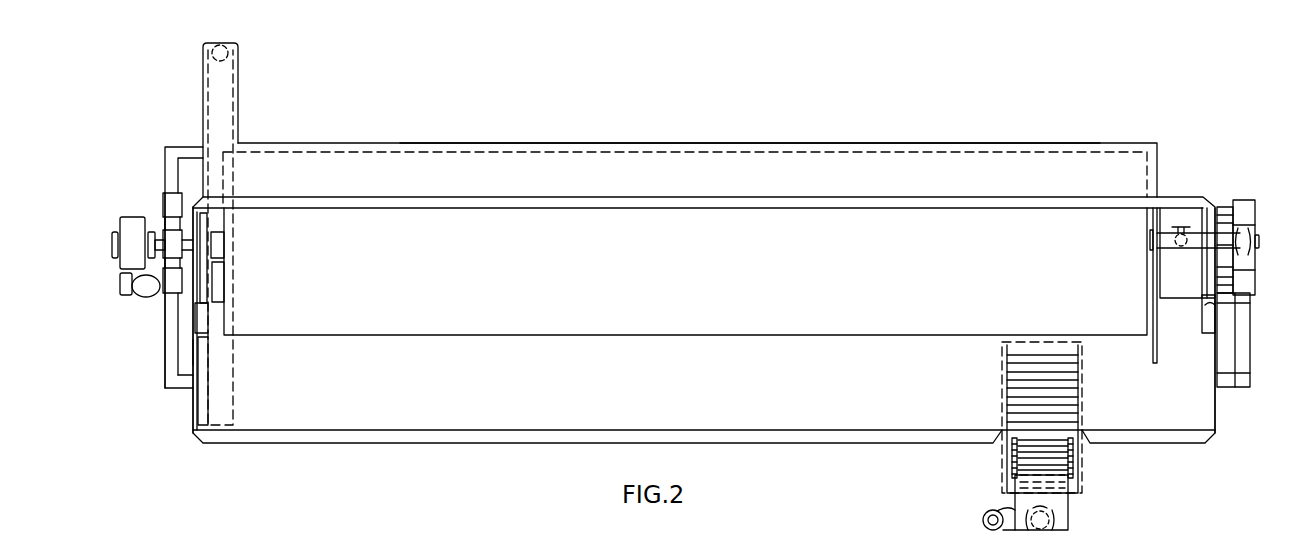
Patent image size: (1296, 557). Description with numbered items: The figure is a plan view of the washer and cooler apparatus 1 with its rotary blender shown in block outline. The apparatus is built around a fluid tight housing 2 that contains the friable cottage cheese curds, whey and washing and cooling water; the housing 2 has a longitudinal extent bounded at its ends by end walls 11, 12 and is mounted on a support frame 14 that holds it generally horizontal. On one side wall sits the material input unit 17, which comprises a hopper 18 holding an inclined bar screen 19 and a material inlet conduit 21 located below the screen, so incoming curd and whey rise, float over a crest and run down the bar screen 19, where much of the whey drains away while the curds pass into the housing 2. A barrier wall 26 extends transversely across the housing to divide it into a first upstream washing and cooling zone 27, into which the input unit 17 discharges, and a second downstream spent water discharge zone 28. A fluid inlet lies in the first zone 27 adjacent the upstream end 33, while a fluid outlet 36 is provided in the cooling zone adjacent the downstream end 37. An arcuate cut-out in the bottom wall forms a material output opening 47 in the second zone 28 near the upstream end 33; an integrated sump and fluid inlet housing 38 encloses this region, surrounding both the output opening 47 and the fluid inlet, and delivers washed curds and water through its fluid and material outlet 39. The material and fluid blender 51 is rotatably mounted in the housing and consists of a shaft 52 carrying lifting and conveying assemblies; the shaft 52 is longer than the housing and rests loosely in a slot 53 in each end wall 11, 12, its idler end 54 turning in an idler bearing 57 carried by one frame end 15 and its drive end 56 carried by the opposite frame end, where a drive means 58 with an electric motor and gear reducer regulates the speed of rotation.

The washer and cooler apparatus 1 is at (409, 104).
The housing 2 is at (533, 167).
The end wall 11 is at (1218, 403).
The end wall 12 is at (193, 408).
The support frame 14 is at (165, 152).
The frame end 15 is at (1245, 362).
The material input unit 17 is at (1057, 531).
The hopper 18 is at (1083, 478).
The bar screen 19 is at (1002, 460).
The material inlet conduit 21 is at (1004, 515).
The barrier wall 26 is at (1158, 355).
The first zone 27 is at (751, 167).
The second zone 28 is at (1172, 218).
The upstream end 33 is at (186, 352).
The fluid outlet 36 is at (1185, 225).
The downstream end 37 is at (1230, 347).
The sump and fluid inlet housing 38 is at (196, 88).
The fluid and material outlet 39 is at (240, 53).
The material output opening 47 is at (214, 268).
The material and fluid blender 51 is at (569, 340).
The shaft 52 is at (218, 240).
The slot 53 is at (197, 310).
The idler end 54 is at (1260, 240).
The drive end 56 is at (112, 243).
The idler bearing 57 is at (1244, 252).
The drive means 58 is at (152, 201).